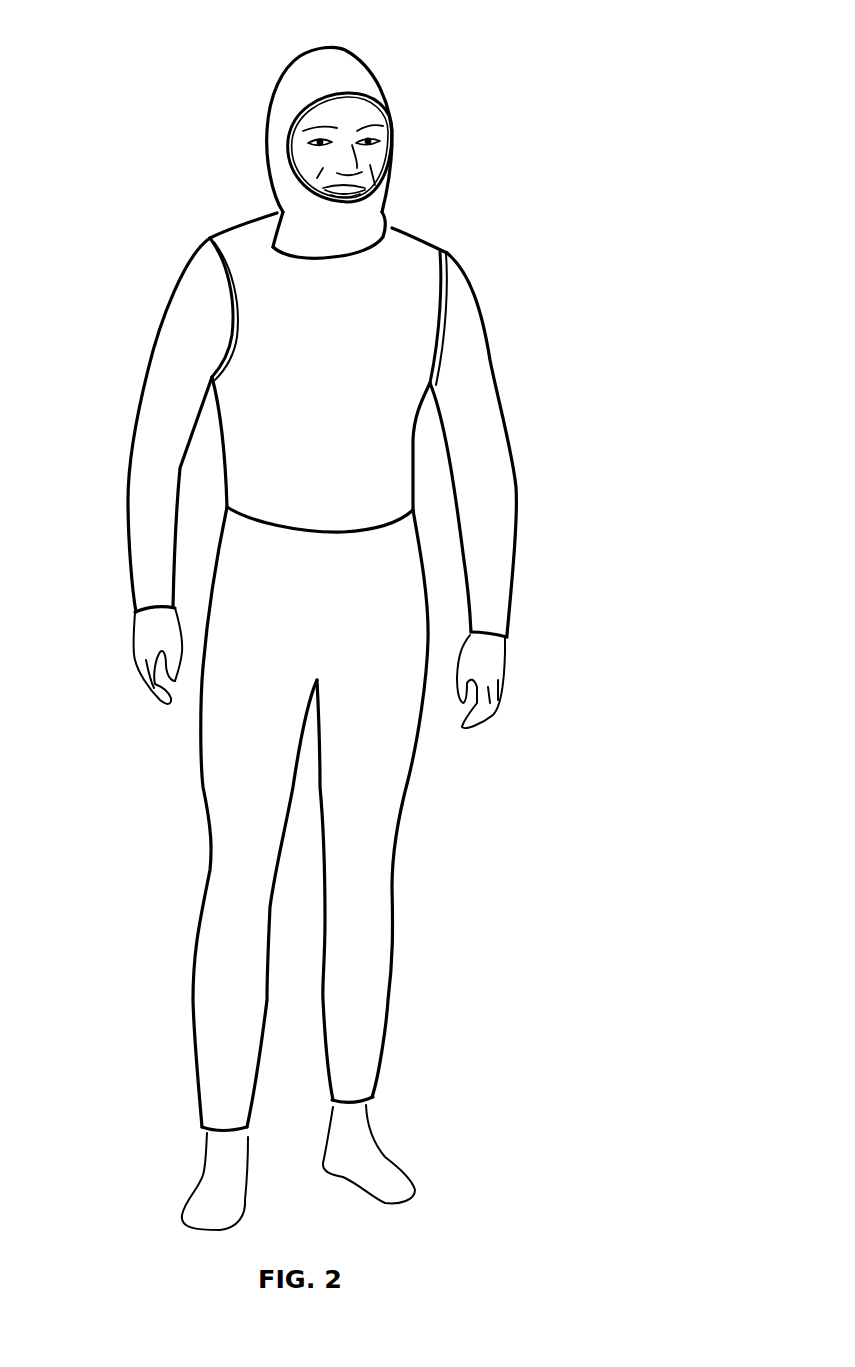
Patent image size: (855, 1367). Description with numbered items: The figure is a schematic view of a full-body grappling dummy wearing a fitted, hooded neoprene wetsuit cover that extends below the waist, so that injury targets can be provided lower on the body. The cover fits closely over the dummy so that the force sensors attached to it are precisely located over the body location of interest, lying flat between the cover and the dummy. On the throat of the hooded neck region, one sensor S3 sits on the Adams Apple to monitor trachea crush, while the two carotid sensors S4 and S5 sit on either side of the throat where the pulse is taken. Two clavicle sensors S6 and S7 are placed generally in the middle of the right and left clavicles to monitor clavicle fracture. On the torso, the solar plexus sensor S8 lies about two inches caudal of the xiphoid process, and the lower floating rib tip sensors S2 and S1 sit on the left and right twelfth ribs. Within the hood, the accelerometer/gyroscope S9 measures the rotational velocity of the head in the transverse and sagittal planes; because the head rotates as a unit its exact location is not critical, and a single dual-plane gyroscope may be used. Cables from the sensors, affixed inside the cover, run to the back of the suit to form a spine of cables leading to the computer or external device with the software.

The sensor on lower floating rib tip S1 is at (403, 462).
The sensor on lower floating rib tip S2 is at (232, 443).
The sensor on Adams Apple S3 is at (343, 232).
The sensor on carotid S4 is at (378, 207).
The sensor on carotid S5 is at (297, 210).
The sensor on clavicle S6 is at (413, 263).
The sensor on clavicle S7 is at (263, 257).
The sensor on solar plexus S8 is at (357, 443).
The accelerometer/gyroscope S9 is at (345, 82).